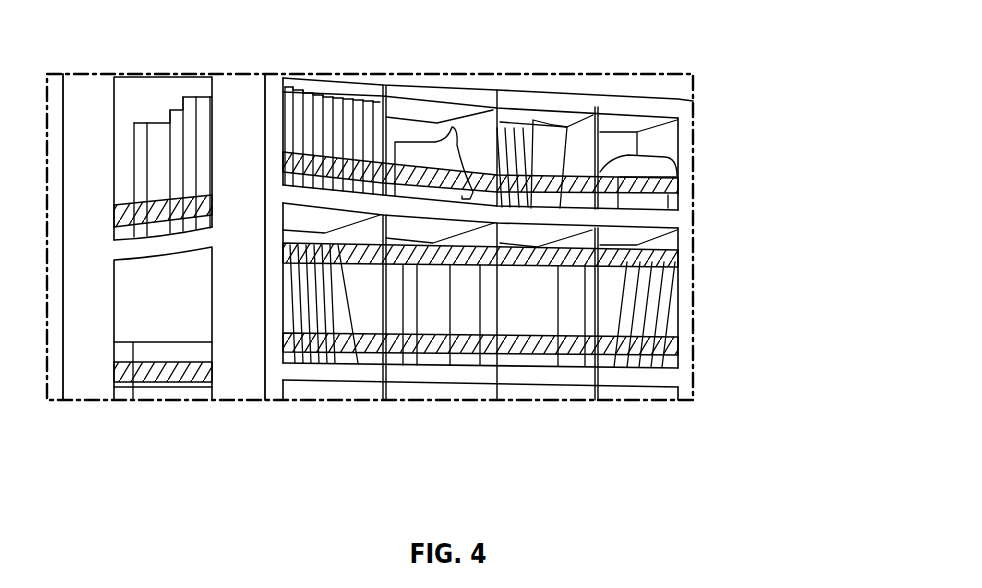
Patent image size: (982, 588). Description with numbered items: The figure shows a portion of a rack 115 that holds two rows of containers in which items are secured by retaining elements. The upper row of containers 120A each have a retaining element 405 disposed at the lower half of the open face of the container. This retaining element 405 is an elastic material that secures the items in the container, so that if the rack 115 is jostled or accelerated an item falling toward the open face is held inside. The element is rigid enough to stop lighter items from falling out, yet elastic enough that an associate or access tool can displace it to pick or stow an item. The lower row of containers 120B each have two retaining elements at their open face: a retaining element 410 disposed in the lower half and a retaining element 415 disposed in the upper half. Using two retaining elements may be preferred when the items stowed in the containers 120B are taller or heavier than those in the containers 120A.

The rack 115 is at (89, 87).
The retaining element 405 is at (632, 173).
The containers 120A is at (707, 118).
The containers 120B is at (707, 227).
The retaining element 410 is at (512, 265).
The retaining element 415 is at (377, 363).